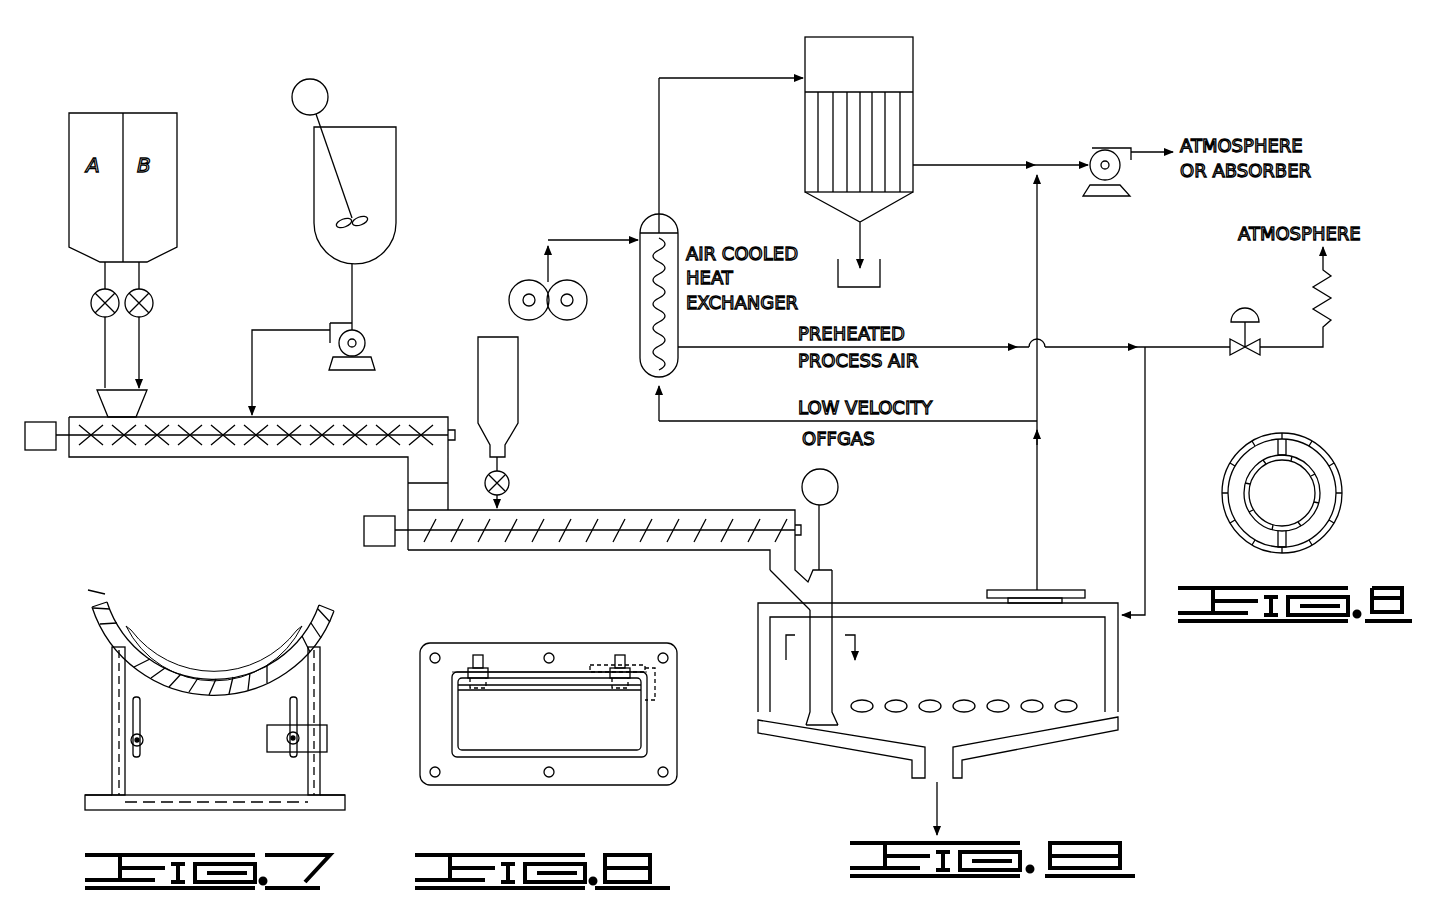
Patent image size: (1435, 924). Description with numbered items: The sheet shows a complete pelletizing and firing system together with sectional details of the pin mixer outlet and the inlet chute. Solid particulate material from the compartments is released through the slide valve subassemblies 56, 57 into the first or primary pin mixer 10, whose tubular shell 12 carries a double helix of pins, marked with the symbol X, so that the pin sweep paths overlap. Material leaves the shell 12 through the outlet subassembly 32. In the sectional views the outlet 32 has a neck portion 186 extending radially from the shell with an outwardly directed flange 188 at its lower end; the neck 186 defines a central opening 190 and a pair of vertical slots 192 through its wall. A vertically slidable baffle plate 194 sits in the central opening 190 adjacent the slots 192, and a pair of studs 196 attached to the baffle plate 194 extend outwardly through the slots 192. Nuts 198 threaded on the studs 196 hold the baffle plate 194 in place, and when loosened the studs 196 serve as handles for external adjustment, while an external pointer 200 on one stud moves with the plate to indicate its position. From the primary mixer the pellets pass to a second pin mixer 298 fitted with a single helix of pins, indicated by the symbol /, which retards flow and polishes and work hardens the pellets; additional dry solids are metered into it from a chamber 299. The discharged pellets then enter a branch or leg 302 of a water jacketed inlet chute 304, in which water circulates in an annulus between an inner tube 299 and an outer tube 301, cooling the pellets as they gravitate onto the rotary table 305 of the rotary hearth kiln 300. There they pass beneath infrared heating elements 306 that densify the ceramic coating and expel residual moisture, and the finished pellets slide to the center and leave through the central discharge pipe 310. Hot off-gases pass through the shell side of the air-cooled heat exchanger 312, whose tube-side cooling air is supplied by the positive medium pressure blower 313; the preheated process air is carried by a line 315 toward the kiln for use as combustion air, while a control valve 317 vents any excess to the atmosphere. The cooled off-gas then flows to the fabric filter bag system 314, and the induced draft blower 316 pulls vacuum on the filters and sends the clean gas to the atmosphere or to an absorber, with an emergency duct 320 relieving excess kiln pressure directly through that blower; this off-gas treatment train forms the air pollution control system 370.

In FIG. 6, the pin mixer 10 is at (258, 460).
In FIG. 7, the tubular shell 12 is at (97, 617).
In FIG. 7, the outlet subassembly 32 is at (215, 806).
In FIG. 8, the outlet subassembly 32 is at (680, 784).
In FIG. 6, the slide valve subassembly 56 is at (158, 293).
In FIG. 6, the slide valve subassembly 57 is at (98, 318).
In FIG. 7, the neck portion 186 is at (322, 662).
In FIG. 8, the neck portion 186 is at (482, 756).
In FIG. 7, the flange 188 is at (330, 806).
In FIG. 8, the flange 188 is at (515, 779).
In FIG. 8, the central opening 190 is at (585, 745).
In FIG. 7, the slots 192 is at (136, 706).
In FIG. 8, the baffle plate 194 is at (515, 683).
In FIG. 7, the studs 196 is at (130, 742).
In FIG. 8, the studs 196 is at (622, 655).
In FIG. 8, the nuts 198 is at (466, 660).
In FIG. 7, the external pointer 200 is at (330, 738).
In FIG. 6, the second pin mixer 298 is at (620, 505).
In FIG. 6, the chamber 299 is at (503, 403).
In FIG. 9, the chamber 299 is at (1259, 461).
In FIG. 6, the rotary hearth kiln 300 is at (1072, 750).
In FIG. 9, the outer tube 301 is at (1316, 447).
In FIG. 6, the branch or leg 302 is at (800, 590).
In FIG. 6, the water jacketed inlet chute 304 is at (822, 635).
In FIG. 9, the water jacketed inlet chute 304 is at (1345, 480).
In FIG. 6, the rotary table 305 is at (998, 742).
In FIG. 6, the infrared heating elements 306 is at (998, 700).
In FIG. 6, the discharge pipe 310 is at (935, 762).
In FIG. 6, the air-cooled heat exchanger 312 is at (636, 340).
In FIG. 6, the blower 313 is at (522, 288).
In FIG. 6, the fabric filter bag system 314 is at (893, 128).
In FIG. 6, the preheated air line 315 is at (1142, 498).
In FIG. 6, the induced draft blower 316 is at (1112, 152).
In FIG. 6, the control valve 317 is at (1233, 329).
In FIG. 6, the emergency duct 320 is at (1042, 270).
In FIG. 6, the air pollution control system 370 is at (1292, 354).